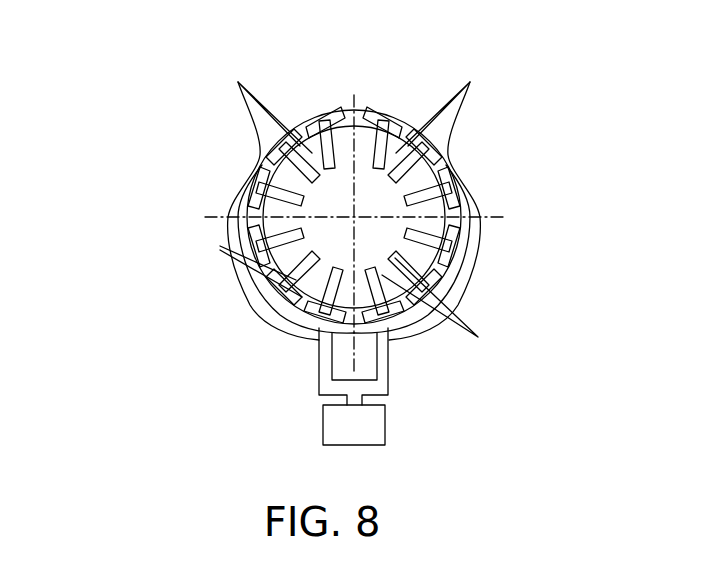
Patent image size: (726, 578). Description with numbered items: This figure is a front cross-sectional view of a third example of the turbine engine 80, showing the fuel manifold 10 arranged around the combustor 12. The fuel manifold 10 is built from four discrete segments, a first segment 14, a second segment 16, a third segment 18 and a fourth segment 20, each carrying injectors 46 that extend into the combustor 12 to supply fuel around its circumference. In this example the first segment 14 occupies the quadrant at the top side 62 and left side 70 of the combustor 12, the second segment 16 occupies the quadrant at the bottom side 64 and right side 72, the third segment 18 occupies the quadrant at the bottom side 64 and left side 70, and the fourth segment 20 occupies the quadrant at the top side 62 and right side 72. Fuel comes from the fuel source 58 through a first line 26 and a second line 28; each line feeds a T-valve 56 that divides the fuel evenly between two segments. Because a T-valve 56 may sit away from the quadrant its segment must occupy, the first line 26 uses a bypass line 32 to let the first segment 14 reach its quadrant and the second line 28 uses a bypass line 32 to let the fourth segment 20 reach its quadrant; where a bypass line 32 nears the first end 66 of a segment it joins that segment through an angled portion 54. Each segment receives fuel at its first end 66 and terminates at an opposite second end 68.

The fuel manifold 10 is at (138, 134).
The combustor 12 is at (362, 112).
The first segment 14 is at (262, 155).
The second segment 16 is at (390, 318).
The third segment 18 is at (262, 330).
The fourth segment 20 is at (446, 158).
The first line 26 is at (318, 366).
The second line 28 is at (392, 368).
The bypass line 32 is at (470, 272).
The injector 46 is at (238, 82).
The angled portion 54 is at (238, 207).
The T-valve 56 is at (319, 337).
The fuel source 58 is at (345, 437).
The top side 62 is at (343, 74).
The bottom side 64 is at (490, 355).
The first end 66 is at (250, 187).
The second end 68 is at (337, 110).
The left side 70 is at (128, 224).
The right side 72 is at (514, 228).
The turbine engine 80 is at (553, 79).